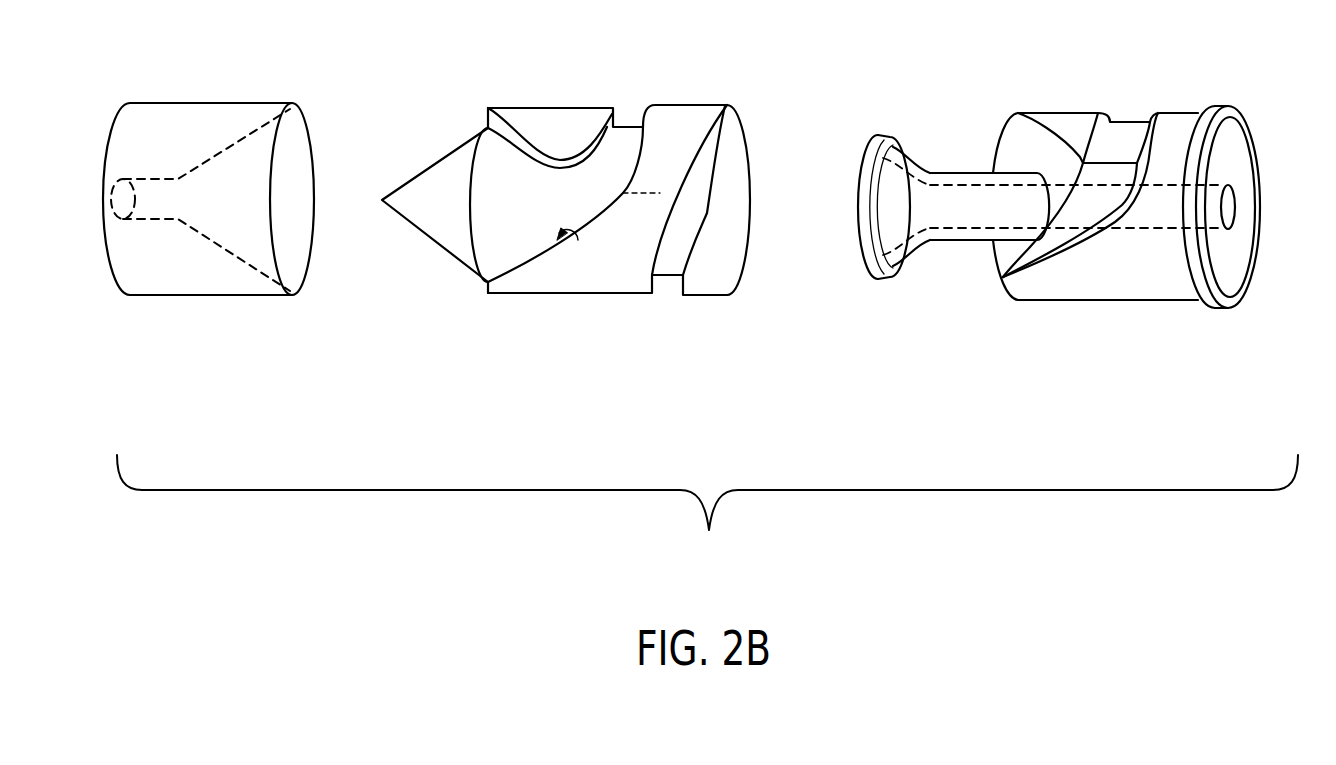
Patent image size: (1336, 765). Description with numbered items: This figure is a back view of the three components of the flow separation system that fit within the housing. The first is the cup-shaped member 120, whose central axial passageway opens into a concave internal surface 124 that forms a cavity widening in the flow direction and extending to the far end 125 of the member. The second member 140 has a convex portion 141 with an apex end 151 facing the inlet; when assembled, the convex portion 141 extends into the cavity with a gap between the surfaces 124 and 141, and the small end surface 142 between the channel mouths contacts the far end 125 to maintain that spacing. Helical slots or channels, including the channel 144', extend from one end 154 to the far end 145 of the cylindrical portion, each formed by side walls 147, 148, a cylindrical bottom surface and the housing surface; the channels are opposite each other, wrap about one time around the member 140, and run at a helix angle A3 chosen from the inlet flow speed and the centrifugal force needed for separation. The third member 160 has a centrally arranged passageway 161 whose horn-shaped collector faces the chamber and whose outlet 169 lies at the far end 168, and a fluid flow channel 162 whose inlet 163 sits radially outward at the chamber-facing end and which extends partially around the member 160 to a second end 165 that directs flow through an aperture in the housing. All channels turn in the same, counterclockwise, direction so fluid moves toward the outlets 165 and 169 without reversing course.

The cup-shaped member 120 is at (234, 226).
The concave internal surface 124 is at (290, 157).
The far end of the member 125 is at (293, 104).
The second member 140 is at (590, 232).
The convex portion 141 is at (434, 205).
The end surface 142 is at (480, 114).
The helical channel 144' is at (607, 204).
The far end of the cylindrical portion 145 is at (732, 151).
The side wall 147 is at (619, 101).
The side wall 148 is at (573, 242).
The apex end 151 is at (383, 196).
The one end 154 is at (488, 106).
The helix angle A3 is at (660, 193).
The member 160 is at (1080, 223).
The centrally arranged passageway 161 is at (942, 193).
The fluid flow channel 162 is at (1124, 120).
The inlet 163 is at (1003, 258).
The second end 165 is at (1119, 130).
The far end 168 is at (1242, 207).
The outlet 169 is at (1231, 200).